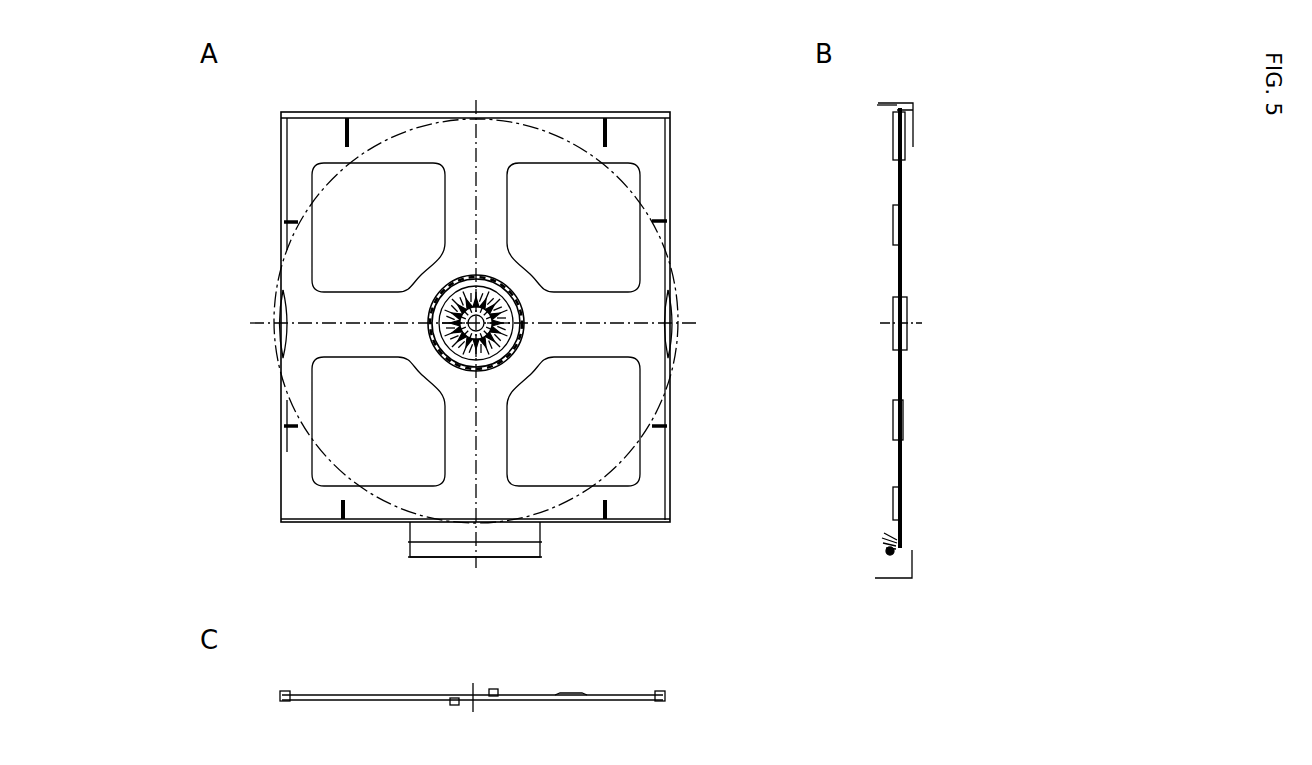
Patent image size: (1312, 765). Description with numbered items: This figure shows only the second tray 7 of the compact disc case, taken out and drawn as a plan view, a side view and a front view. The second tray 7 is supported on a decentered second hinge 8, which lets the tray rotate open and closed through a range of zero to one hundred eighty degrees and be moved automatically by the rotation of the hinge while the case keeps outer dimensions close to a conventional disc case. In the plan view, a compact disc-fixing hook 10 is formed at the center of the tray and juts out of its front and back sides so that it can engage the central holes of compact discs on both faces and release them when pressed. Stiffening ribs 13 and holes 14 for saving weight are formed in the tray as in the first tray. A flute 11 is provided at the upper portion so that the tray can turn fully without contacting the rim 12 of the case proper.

The second tray 7 is at (533, 118).
The second hinge 8 is at (545, 556).
The compact disc-fixing hook 10 is at (527, 301).
The flute 11 is at (882, 535).
The rim 12 is at (897, 580).
The stiffening ribs 13 is at (352, 128).
The holes 14 is at (640, 184).